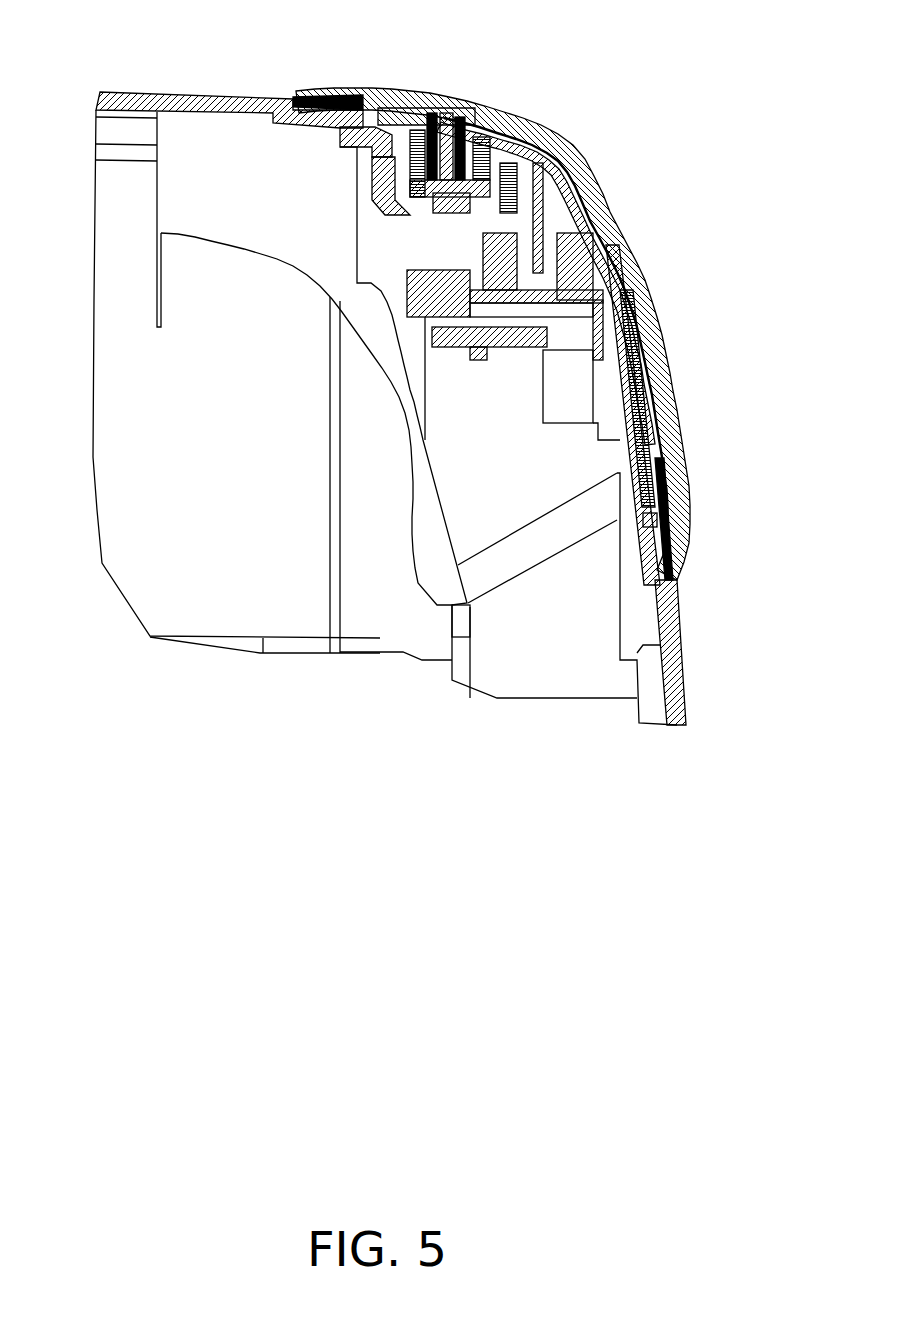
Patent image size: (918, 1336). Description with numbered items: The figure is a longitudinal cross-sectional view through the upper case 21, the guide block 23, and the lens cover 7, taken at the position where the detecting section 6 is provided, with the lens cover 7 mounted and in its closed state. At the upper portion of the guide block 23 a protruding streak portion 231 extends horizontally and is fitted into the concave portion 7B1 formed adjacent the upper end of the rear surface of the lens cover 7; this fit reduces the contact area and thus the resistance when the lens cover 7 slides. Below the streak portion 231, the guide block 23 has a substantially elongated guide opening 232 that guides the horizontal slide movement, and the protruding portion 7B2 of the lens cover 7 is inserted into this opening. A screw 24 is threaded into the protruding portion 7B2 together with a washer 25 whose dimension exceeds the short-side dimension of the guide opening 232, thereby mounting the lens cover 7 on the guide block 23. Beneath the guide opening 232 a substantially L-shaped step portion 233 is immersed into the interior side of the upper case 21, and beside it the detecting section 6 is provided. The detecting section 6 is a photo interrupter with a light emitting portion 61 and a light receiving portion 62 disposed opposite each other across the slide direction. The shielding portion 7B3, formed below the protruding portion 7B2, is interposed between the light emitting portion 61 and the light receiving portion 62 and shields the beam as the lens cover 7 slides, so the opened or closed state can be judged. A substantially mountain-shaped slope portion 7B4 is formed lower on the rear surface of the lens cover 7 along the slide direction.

The upper case 21 is at (178, 92).
The concave portion 7B1 is at (383, 88).
The protruding portion 7B2 is at (480, 118).
The shielding portion 7B3 is at (555, 218).
The slope portion 7B4 is at (690, 530).
The step portion 233 is at (597, 195).
The protruding streak portion 231 is at (372, 142).
The guide opening 232 is at (412, 150).
The washer 25 is at (392, 190).
The screw 24 is at (437, 212).
The light emitting portion 61 is at (503, 303).
The light receiving portion 62 is at (590, 287).
The detecting section 6 is at (532, 403).
The lens cover 7 is at (663, 372).
The guide block 23 is at (652, 446).